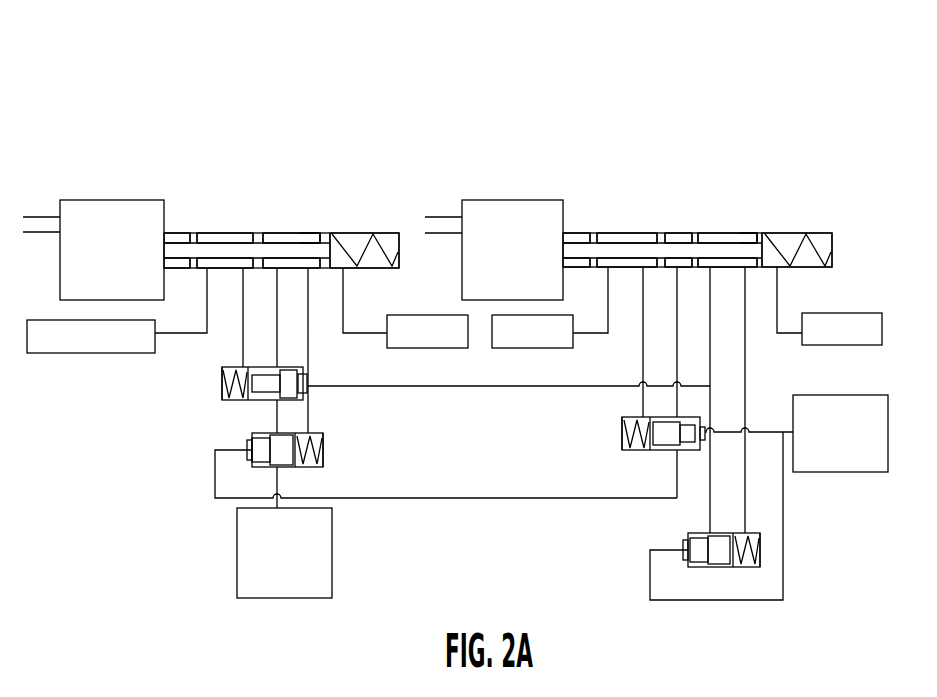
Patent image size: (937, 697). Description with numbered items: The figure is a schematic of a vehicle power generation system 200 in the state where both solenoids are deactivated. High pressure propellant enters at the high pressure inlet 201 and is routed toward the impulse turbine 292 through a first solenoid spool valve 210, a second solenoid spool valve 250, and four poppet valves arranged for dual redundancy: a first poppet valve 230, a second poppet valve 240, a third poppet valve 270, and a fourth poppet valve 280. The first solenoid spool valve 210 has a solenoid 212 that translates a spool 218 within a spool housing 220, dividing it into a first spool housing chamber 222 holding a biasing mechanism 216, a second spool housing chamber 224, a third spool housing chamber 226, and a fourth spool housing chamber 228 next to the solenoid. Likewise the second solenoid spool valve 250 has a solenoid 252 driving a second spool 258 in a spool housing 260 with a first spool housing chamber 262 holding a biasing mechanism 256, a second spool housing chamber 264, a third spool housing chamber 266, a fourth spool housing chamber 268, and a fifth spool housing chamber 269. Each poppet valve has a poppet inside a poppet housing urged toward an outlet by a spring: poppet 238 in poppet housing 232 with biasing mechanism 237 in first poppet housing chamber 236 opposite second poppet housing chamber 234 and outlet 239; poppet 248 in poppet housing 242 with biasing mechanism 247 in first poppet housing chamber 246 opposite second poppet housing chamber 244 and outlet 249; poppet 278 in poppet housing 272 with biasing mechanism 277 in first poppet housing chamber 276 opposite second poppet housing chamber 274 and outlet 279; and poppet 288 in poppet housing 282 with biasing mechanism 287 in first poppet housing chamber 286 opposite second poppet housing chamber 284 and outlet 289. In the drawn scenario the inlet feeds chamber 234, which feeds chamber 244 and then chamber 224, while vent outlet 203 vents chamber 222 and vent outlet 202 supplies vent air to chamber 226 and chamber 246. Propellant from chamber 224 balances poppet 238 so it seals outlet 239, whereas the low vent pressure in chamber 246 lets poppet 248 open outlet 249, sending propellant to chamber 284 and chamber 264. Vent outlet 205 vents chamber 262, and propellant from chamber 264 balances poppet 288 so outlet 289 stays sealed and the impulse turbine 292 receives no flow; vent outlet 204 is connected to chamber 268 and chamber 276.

The vehicle power generation system 200 is at (158, 98).
The high pressure inlet 201 is at (295, 600).
The vent outlet 202 is at (112, 354).
The vent outlet 203 is at (417, 349).
The vent outlet 204 is at (527, 349).
The vent outlet 205 is at (835, 346).
The first solenoid spool valve 210 is at (116, 156).
The solenoid 212 is at (118, 200).
The biasing mechanism 216 is at (380, 237).
The spool 218 is at (311, 247).
The spool housing 220 is at (308, 234).
The first spool housing chamber 222 is at (363, 265).
The second spool housing chamber 224 is at (293, 233).
The third spool housing chamber 226 is at (238, 234).
The fourth spool housing chamber 228 is at (174, 236).
The first poppet valve 230 is at (364, 455).
The poppet housing 232 is at (297, 467).
The second poppet housing chamber 234 is at (272, 435).
The first poppet housing chamber 236 is at (302, 465).
The biasing mechanism 237 is at (312, 438).
The poppet 238 is at (260, 465).
The outlet 239 is at (247, 443).
The second poppet valve 240 is at (191, 397).
The poppet housing 242 is at (298, 368).
The second poppet housing chamber 244 is at (282, 367).
The first poppet housing chamber 246 is at (238, 374).
The biasing mechanism 247 is at (223, 373).
The poppet 248 is at (267, 382).
The outlet 249 is at (307, 378).
The second solenoid spool valve 250 is at (453, 144).
The solenoid 252 is at (540, 200).
The biasing mechanism 256 is at (808, 233).
The second spool 258 is at (745, 248).
The spool housing 260 is at (752, 233).
The first spool housing chamber 262 is at (803, 265).
The second spool housing chamber 264 is at (735, 235).
The third spool housing chamber 266 is at (668, 233).
The fourth spool housing chamber 268 is at (607, 237).
The fifth spool housing chamber 269 is at (575, 235).
The third poppet valve 270 is at (594, 442).
The poppet housing 272 is at (698, 417).
The second poppet housing chamber 274 is at (670, 452).
The first poppet housing chamber 276 is at (640, 417).
The biasing mechanism 277 is at (622, 433).
The poppet 278 is at (652, 443).
The outlet 279 is at (708, 430).
The fourth poppet valve 280 is at (797, 548).
The poppet housing 282 is at (730, 567).
The second poppet housing chamber 284 is at (710, 533).
The first poppet housing chamber 286 is at (740, 562).
The biasing mechanism 287 is at (742, 560).
The poppet 288 is at (708, 550).
The outlet 289 is at (687, 542).
The impulse turbine 292 is at (817, 472).